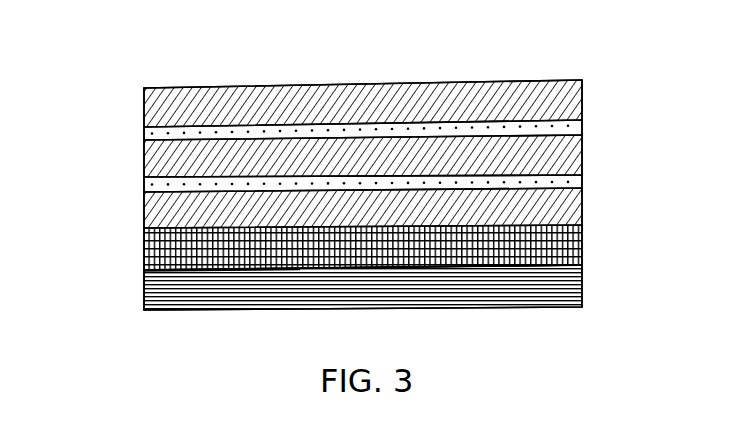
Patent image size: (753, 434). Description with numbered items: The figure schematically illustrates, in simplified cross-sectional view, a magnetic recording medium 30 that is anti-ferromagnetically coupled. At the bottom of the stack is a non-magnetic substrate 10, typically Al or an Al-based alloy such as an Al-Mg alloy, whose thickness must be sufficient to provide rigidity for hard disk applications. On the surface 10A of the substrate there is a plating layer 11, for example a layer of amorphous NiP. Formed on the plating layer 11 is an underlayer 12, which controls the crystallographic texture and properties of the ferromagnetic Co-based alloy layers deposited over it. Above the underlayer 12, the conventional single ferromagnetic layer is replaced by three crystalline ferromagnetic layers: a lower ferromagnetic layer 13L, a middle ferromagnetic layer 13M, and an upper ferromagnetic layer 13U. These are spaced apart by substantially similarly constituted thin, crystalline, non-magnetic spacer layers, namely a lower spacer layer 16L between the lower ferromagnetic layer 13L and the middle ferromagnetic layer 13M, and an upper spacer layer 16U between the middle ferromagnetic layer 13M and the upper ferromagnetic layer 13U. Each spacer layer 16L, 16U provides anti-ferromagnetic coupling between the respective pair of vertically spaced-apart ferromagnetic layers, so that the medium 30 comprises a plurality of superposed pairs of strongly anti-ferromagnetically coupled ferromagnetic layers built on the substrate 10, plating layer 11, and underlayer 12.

The magnetic recording medium 30 is at (121, 74).
The upper ferromagnetic layer 13U is at (618, 97).
The upper spacer layer 16U is at (618, 125).
The middle ferromagnetic layer 13M is at (618, 150).
The lower spacer layer 16L is at (618, 178).
The lower ferromagnetic layer 13L is at (618, 207).
The underlayer 12 is at (618, 248).
The plating layer 11 is at (587, 266).
The non-magnetic substrate 10 is at (618, 292).
The surface of the substrate 10A is at (136, 276).